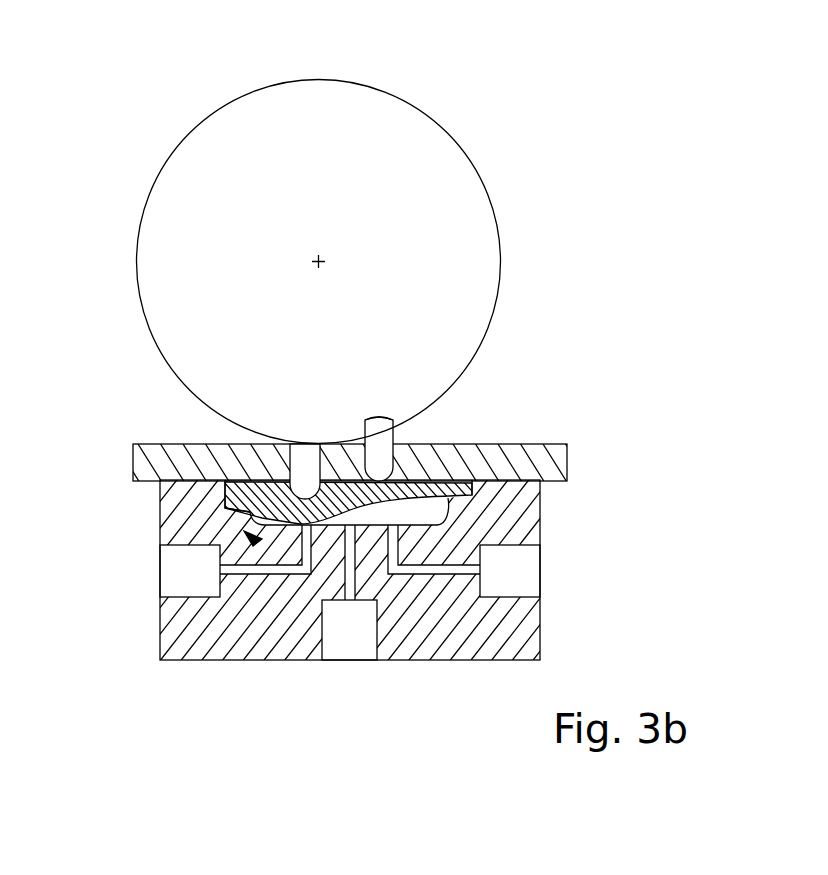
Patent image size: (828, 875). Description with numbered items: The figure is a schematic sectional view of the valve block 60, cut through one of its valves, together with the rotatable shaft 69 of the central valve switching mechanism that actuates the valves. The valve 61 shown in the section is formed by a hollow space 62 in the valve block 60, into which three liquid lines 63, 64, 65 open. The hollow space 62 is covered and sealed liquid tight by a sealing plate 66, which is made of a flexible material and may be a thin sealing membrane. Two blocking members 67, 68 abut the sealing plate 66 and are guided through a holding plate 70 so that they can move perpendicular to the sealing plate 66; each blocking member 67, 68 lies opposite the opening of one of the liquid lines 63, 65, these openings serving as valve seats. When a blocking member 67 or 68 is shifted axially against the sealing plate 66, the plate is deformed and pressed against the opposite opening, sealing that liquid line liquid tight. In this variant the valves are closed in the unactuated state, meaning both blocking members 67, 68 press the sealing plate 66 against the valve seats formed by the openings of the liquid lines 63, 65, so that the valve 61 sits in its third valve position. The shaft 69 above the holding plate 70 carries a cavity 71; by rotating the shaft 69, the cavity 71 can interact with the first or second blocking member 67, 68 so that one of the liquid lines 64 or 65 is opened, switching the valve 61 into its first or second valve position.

The valve block 60 is at (538, 623).
The valve 61 is at (240, 531).
The hollow space 62 is at (440, 512).
The liquid line 63 is at (165, 564).
The liquid line 64 is at (352, 648).
The liquid line 65 is at (530, 574).
The sealing plate 66 is at (467, 491).
The blocking member 67 is at (388, 433).
The blocking member 68 is at (292, 484).
The rotatable shaft 69 is at (484, 257).
The holding plate 70 is at (560, 456).
The cavity 71 is at (380, 418).